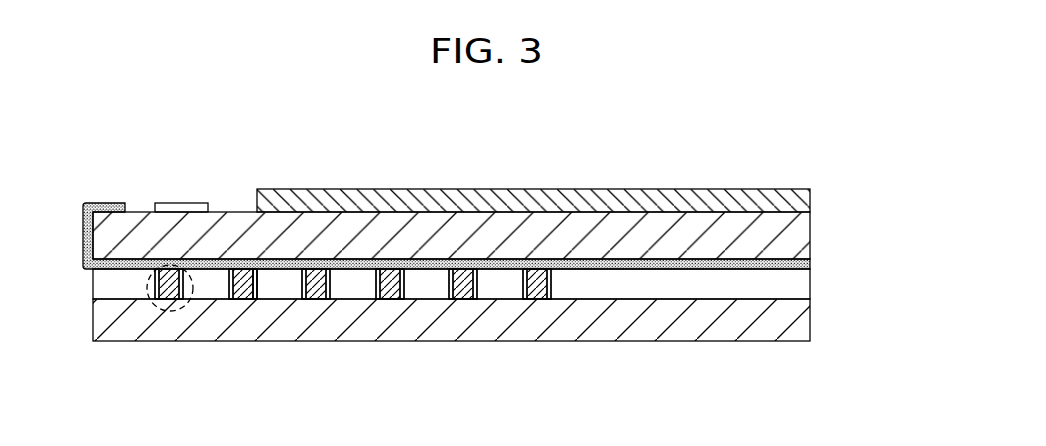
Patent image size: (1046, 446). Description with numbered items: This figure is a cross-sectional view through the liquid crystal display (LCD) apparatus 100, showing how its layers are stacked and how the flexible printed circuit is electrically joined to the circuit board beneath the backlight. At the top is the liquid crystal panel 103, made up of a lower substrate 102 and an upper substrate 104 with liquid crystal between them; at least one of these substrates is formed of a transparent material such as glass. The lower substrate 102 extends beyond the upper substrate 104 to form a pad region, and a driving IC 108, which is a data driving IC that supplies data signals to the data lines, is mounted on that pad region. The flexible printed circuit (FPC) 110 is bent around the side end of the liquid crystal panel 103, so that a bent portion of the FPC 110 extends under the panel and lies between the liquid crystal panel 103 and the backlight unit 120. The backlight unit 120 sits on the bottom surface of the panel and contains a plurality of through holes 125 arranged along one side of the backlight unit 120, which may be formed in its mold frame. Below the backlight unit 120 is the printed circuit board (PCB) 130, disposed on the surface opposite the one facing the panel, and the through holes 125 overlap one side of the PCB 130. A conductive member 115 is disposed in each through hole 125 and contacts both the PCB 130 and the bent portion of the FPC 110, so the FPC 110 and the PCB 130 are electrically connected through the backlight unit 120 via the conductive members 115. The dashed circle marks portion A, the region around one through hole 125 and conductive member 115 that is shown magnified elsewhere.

The liquid crystal display (LCD) apparatus 100 is at (504, 244).
The lower substrate 102 is at (795, 233).
The liquid crystal panel 103 is at (509, 224).
The upper substrate 104 is at (795, 202).
The driving IC 108 is at (183, 203).
The flexible printed circuit (FPC) 110 is at (103, 203).
The conductive member 115 is at (238, 290).
The backlight unit 120 is at (795, 284).
The through hole 125 is at (250, 292).
The printed circuit board (PCB) 130 is at (795, 310).
The portion A is at (167, 315).